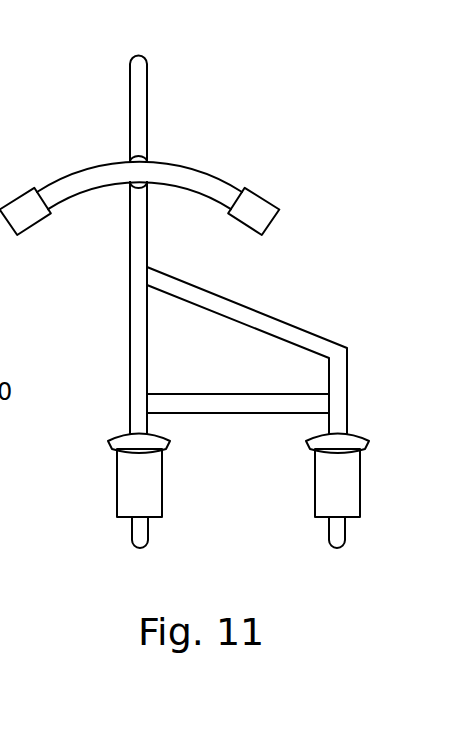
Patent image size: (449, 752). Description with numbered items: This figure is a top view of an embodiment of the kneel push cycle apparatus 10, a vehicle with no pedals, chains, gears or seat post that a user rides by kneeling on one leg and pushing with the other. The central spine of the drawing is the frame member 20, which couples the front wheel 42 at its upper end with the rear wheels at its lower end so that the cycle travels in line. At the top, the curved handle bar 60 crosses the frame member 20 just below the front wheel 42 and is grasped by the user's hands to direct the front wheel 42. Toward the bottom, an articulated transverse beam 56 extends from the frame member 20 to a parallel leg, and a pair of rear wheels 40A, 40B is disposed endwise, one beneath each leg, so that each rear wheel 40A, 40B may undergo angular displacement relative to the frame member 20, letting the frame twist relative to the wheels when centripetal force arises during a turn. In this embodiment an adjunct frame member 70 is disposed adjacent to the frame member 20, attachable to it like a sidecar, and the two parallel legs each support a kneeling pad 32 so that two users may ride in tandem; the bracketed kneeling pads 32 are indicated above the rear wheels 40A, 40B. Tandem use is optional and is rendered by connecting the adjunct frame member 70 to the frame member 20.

The kneel push cycle apparatus 10 is at (275, 68).
The frame member 20 is at (139, 318).
The kneeling pad 32 is at (325, 487).
The rear wheel 40A is at (130, 542).
The rear wheel 40B is at (348, 543).
The front wheel 42 is at (130, 97).
The articulated transverse beam 56 is at (238, 414).
The handle bar 60 is at (98, 175).
The adjunct frame member 70 is at (358, 220).